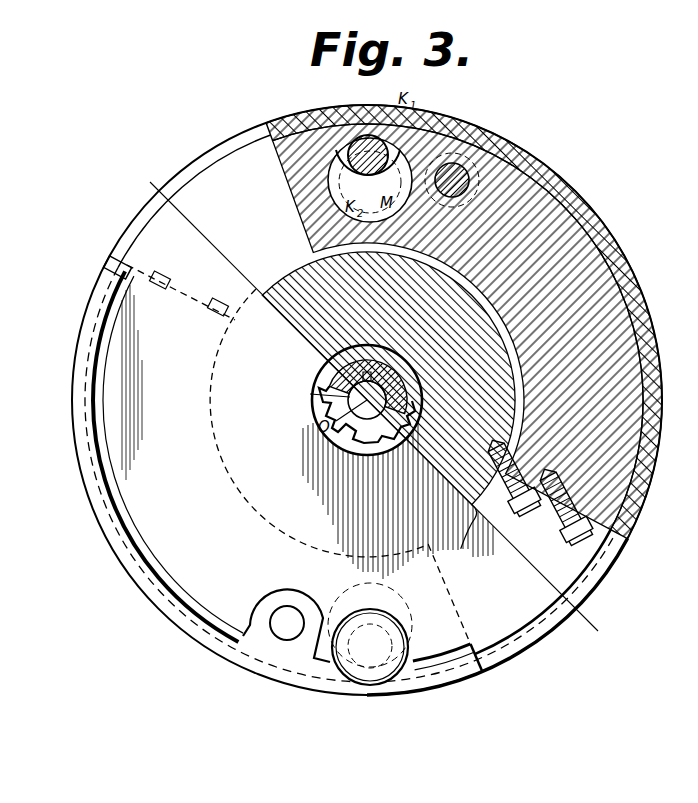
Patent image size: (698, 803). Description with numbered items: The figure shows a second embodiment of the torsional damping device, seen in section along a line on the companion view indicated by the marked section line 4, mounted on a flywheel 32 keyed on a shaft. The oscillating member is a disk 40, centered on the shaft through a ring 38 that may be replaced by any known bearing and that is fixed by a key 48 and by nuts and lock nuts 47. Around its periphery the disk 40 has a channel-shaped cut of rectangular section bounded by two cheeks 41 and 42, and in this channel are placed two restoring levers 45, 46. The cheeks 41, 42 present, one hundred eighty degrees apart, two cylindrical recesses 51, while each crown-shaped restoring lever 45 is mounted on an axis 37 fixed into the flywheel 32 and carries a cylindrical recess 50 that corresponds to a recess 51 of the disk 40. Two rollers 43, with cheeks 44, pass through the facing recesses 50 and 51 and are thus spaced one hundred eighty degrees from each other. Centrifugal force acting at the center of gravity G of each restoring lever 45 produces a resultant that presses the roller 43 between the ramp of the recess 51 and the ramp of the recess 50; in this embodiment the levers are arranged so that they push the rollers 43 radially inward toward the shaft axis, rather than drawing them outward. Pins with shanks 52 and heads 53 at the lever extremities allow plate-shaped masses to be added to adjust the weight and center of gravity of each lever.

The section line 4- 4 is at (400, 88).
The flywheel 32 is at (508, 640).
The axes 37 is at (462, 172).
The ring 38 is at (396, 436).
The disk 40 is at (208, 187).
The cheek 41 is at (556, 578).
The cheek 42 is at (165, 558).
The rollers 43 is at (400, 142).
The cheeks of rollers 44 is at (330, 182).
The restoring lever 45 is at (100, 343).
The restoring lever 46 is at (632, 283).
The nuts and lock nuts 47 is at (333, 382).
The key 48 is at (367, 373).
The cylindrical recess 50 is at (330, 195).
The cylindrical recesses 51 is at (358, 162).
The pin shanks 52 is at (535, 497).
The pin heads 53 is at (575, 530).
The center of gravity G is at (527, 290).